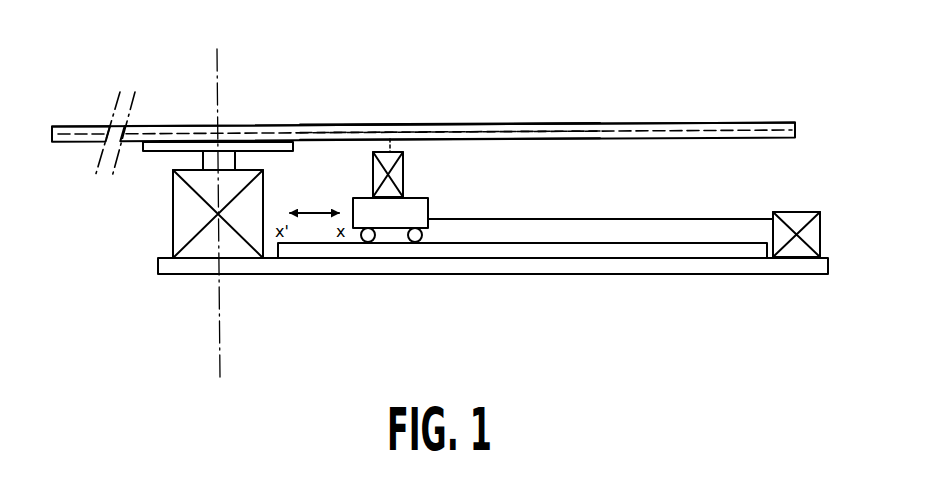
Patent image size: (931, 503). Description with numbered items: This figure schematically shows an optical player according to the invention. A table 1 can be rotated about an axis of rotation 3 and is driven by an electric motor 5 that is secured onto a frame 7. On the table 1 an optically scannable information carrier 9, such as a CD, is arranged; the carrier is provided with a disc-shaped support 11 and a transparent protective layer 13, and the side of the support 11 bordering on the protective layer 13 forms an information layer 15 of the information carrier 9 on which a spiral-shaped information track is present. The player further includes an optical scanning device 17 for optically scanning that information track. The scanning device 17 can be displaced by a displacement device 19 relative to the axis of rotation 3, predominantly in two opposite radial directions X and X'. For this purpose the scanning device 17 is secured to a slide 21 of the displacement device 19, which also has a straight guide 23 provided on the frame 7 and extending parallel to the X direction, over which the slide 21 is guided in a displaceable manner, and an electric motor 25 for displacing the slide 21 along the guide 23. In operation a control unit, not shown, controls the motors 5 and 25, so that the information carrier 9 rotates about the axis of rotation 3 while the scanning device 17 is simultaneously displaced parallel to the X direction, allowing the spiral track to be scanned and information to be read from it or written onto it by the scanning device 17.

The table 1 is at (168, 147).
The axis of rotation 3 is at (217, 64).
The electric motor 5 is at (183, 218).
The frame 7 is at (515, 263).
The optically scannable information carrier 9 is at (636, 90).
The disc-shaped support 11 is at (458, 125).
The transparent protective layer 13 is at (569, 140).
The information layer 15 is at (525, 130).
The optical scanning device 17 is at (403, 175).
The displacement device 19 is at (644, 210).
The slide 21 is at (420, 207).
The straight guide 23 is at (618, 255).
The electric motor 25 is at (798, 215).